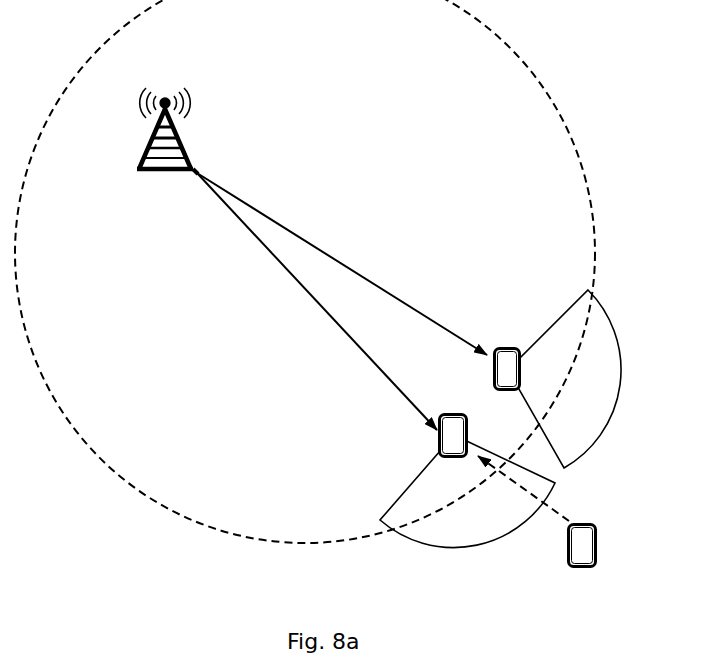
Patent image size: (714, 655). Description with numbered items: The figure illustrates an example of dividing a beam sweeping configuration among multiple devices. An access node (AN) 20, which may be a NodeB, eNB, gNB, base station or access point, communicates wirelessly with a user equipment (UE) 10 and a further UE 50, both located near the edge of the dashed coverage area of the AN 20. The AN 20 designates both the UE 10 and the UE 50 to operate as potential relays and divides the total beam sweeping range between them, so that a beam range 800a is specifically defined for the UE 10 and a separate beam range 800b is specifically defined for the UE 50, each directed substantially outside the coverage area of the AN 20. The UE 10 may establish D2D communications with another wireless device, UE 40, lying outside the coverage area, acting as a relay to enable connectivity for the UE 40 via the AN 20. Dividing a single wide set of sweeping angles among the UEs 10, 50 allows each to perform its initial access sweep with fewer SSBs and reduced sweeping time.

The access node (AN) 20 is at (176, 146).
The user equipment (UE) 10 is at (440, 440).
The user equipment (UE) 50 is at (508, 347).
The user equipment (UE) 40 is at (567, 554).
The beam range 800a is at (438, 541).
The beam range 800b is at (597, 432).